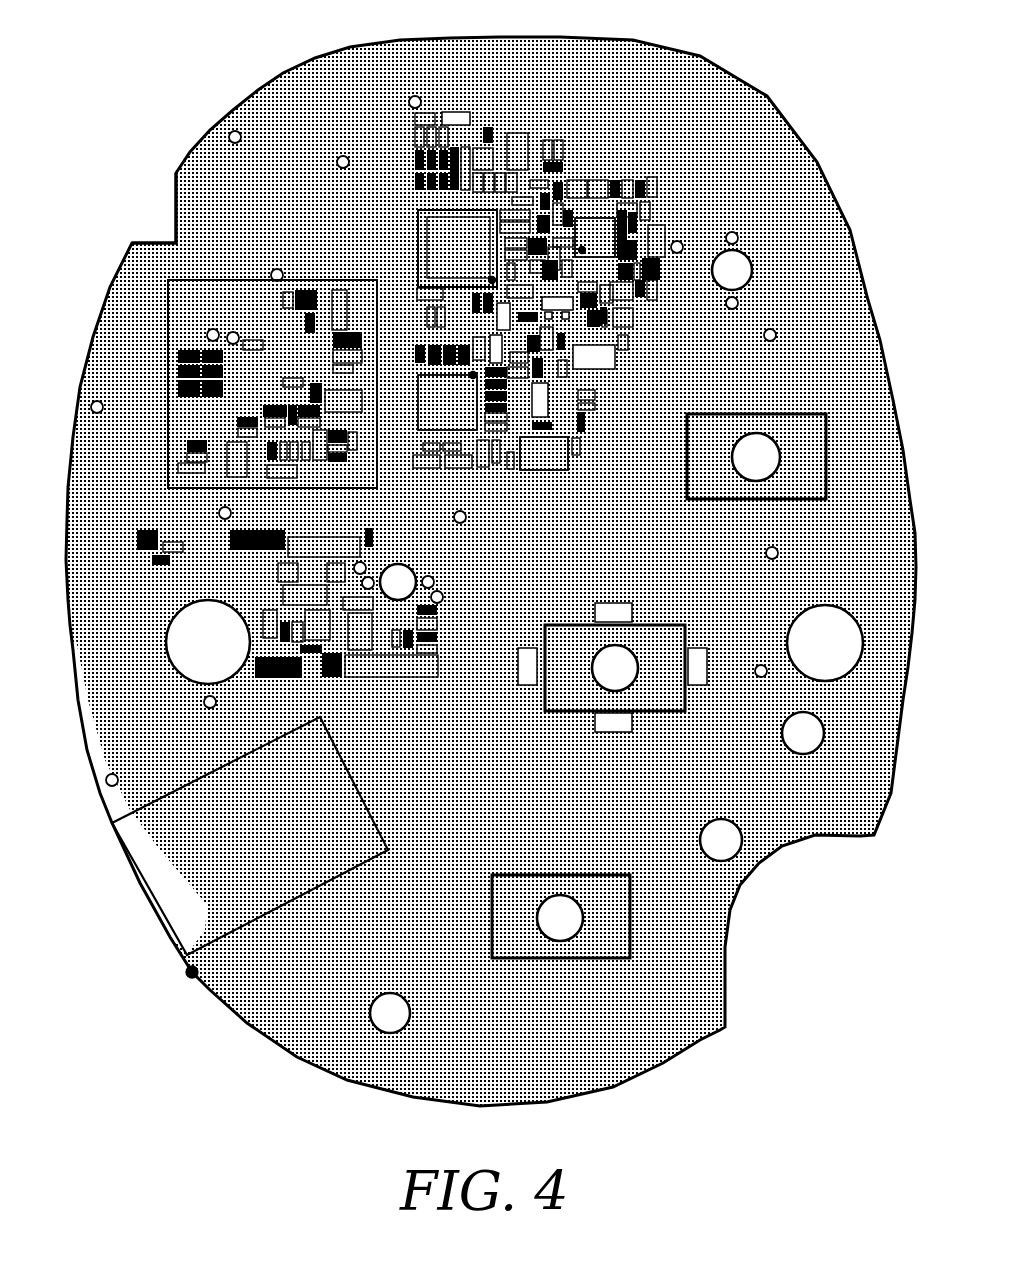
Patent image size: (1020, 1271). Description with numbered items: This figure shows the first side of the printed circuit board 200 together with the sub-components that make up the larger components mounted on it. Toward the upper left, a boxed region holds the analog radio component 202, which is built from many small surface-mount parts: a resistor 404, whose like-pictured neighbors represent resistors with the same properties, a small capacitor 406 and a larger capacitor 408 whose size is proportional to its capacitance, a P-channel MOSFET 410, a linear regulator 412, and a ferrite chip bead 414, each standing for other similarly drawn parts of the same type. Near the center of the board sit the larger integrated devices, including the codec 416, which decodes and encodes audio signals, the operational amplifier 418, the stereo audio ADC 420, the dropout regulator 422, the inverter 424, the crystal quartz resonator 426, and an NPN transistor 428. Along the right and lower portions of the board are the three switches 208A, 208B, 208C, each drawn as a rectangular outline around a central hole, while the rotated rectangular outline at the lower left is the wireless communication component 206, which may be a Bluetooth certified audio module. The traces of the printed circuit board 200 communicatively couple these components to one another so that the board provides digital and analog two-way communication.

The printed circuit board 200 is at (290, 72).
The analog radio component 202 is at (155, 268).
The wireless communication component 206 is at (360, 797).
The switch 208A is at (778, 492).
The switch 208B is at (677, 623).
The switch 208C is at (585, 962).
The resistor 404 is at (178, 353).
The capacitor 406 is at (288, 290).
The capacitor 408 is at (180, 468).
The MOSFET 410 is at (338, 290).
The linear regulator 412 is at (352, 402).
The ferrite chip bead 414 is at (455, 112).
The integrated circuit 416 is at (457, 248).
The operational amplifier 418 is at (598, 223).
The audio ADC 420 is at (447, 401).
The dropout regulator 422 is at (605, 358).
The inverter 424 is at (540, 398).
The resonator 426 is at (544, 453).
The transistor 428 is at (563, 307).